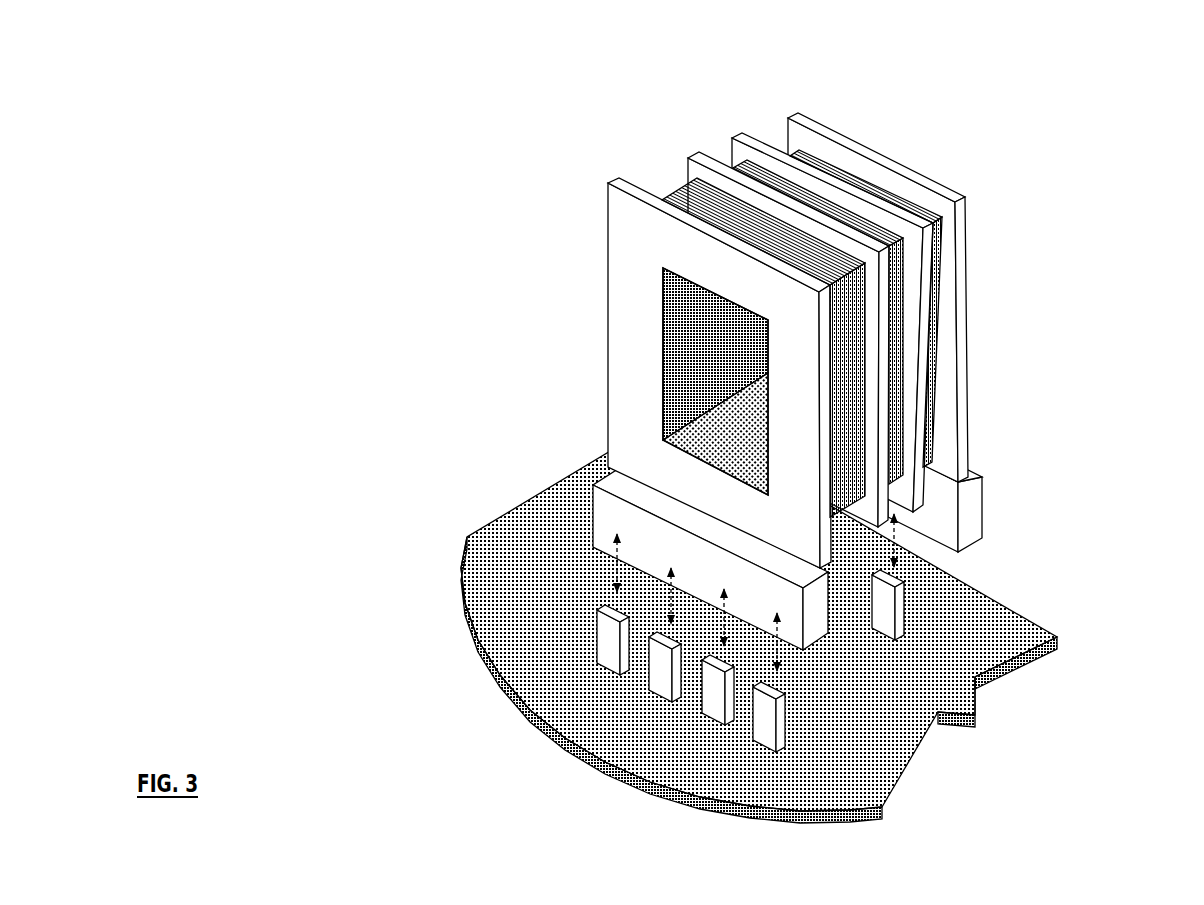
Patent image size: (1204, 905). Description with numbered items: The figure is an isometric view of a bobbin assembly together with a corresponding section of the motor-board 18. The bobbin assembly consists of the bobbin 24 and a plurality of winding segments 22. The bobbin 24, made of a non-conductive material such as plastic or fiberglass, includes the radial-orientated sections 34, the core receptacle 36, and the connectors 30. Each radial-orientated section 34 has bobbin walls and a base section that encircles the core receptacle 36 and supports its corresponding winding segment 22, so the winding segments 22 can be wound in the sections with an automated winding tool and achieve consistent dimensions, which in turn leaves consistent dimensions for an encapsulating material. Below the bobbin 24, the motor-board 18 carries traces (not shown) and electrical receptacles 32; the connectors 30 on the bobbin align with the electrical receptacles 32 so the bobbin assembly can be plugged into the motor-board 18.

The motor-board 18 is at (435, 734).
The winding segments 22 is at (592, 86).
The bobbin 24 is at (462, 422).
The connectors 30 is at (412, 501).
The electrical receptacles 32 is at (375, 642).
The radial-orientated sections 34 is at (477, 172).
The core receptacle 36 is at (537, 356).